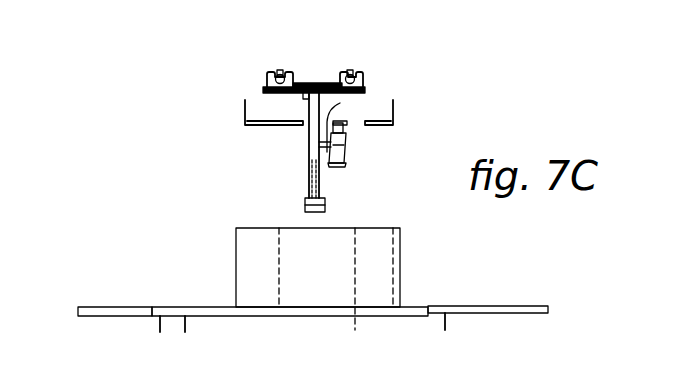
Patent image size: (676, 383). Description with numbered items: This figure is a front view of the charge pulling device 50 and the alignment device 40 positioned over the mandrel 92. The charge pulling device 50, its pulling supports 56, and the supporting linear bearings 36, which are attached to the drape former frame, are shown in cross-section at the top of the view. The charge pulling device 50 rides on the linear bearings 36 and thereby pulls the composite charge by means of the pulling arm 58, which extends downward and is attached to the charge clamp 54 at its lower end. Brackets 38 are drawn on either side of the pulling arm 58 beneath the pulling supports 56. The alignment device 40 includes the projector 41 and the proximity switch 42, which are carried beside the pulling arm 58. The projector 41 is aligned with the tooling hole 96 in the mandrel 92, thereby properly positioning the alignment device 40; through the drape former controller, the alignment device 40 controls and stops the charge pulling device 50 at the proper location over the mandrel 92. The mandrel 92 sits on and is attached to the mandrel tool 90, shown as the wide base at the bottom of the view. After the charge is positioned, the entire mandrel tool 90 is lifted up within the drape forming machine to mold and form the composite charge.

The linear bearings 36 is at (280, 70).
The bracket 38 is at (252, 126).
The alignment device 40 is at (364, 150).
The projector 41 is at (346, 162).
The proximity switch 42 is at (340, 103).
The charge pulling device 50 is at (239, 176).
The charge clamp 54 is at (304, 205).
The pulling supports 56 is at (268, 75).
The pulling arm 58 is at (306, 132).
The mandrel tool 90 is at (552, 280).
The mandrel 92 is at (235, 264).
The tooling hole 96 is at (319, 232).